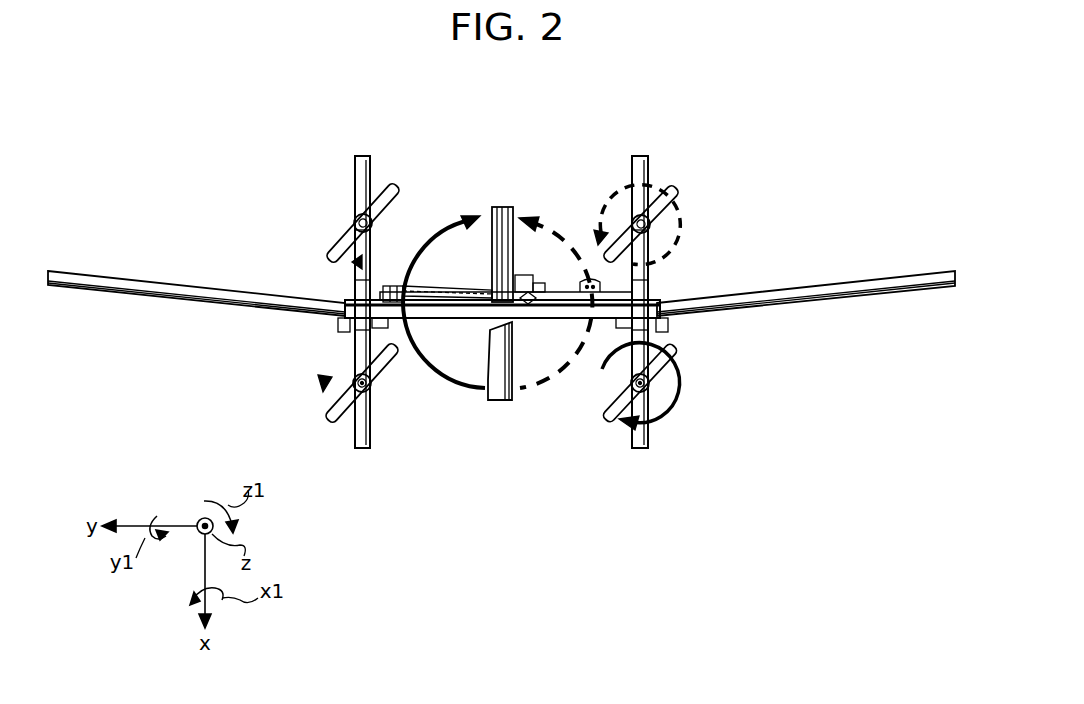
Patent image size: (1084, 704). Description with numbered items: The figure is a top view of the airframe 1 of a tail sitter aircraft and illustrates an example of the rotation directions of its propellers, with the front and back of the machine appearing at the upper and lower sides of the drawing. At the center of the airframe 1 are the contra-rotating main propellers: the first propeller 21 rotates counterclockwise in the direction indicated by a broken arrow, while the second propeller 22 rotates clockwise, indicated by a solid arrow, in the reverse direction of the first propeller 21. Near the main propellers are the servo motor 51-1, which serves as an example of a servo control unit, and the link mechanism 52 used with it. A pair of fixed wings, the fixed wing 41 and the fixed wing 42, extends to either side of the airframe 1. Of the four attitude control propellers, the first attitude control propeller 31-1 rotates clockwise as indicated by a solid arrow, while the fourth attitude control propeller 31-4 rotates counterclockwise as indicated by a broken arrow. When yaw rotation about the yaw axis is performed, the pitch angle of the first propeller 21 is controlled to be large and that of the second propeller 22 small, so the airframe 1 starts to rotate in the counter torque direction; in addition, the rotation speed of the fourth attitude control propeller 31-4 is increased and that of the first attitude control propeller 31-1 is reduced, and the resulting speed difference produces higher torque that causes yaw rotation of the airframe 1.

The airframe 1 is at (270, 152).
The first propeller 21 is at (514, 215).
The second propeller 22 is at (514, 392).
The first attitude control propeller 31-1 is at (610, 418).
The fourth attitude control propeller 31-4 is at (670, 188).
The fixed wing 41 is at (834, 284).
The fixed wing 42 is at (162, 283).
The servo motor 51-1 is at (404, 290).
The link mechanism 52 is at (455, 288).